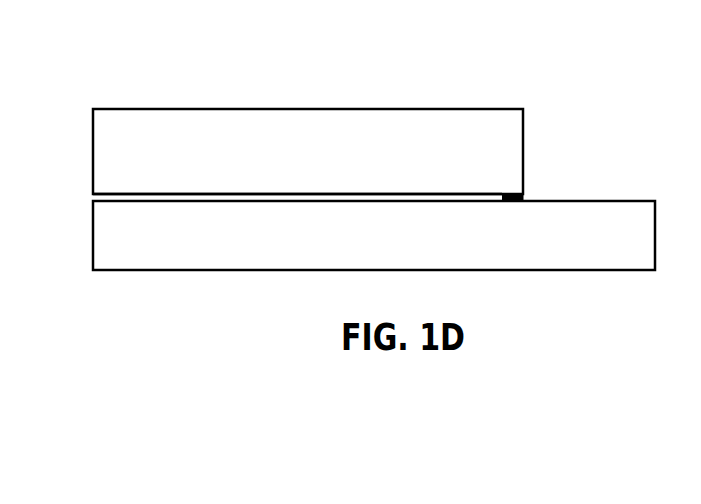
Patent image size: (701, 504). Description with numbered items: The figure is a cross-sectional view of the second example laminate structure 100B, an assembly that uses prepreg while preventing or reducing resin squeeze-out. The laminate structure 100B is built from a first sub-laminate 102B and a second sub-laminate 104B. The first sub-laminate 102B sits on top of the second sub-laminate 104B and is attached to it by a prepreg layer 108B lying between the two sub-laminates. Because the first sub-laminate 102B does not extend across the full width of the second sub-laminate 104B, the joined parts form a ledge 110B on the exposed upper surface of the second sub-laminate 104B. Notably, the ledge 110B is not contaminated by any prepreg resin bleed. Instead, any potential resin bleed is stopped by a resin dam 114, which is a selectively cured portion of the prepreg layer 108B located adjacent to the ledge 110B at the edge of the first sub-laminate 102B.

The second example laminate structure 100B is at (616, 82).
The first sub-laminate 102B is at (467, 146).
The second sub-laminate 104B is at (547, 236).
The prepreg layer 108B is at (92, 196).
The ledge 110B is at (616, 172).
The resin dam 114 is at (523, 198).